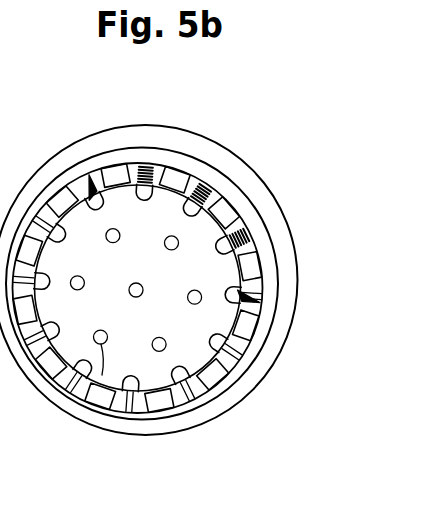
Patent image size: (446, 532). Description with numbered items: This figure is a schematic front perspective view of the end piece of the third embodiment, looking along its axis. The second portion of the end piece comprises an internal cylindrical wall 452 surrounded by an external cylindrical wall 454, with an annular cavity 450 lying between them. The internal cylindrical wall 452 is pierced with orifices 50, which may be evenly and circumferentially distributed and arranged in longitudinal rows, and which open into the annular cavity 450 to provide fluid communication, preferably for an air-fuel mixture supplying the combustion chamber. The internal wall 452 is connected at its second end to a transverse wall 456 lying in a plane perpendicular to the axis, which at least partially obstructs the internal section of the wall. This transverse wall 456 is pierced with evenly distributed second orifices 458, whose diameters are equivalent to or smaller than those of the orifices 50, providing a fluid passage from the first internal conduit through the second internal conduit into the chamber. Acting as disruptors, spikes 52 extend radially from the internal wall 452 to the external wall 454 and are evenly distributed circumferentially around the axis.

The orifices 50 is at (195, 172).
The spikes 52 is at (243, 397).
The annular cavity 450 is at (197, 396).
The internal cylindrical wall 452 is at (250, 234).
The external cylindrical wall 454 is at (286, 277).
The transverse wall 456 is at (140, 363).
The second orifices 458 is at (75, 372).